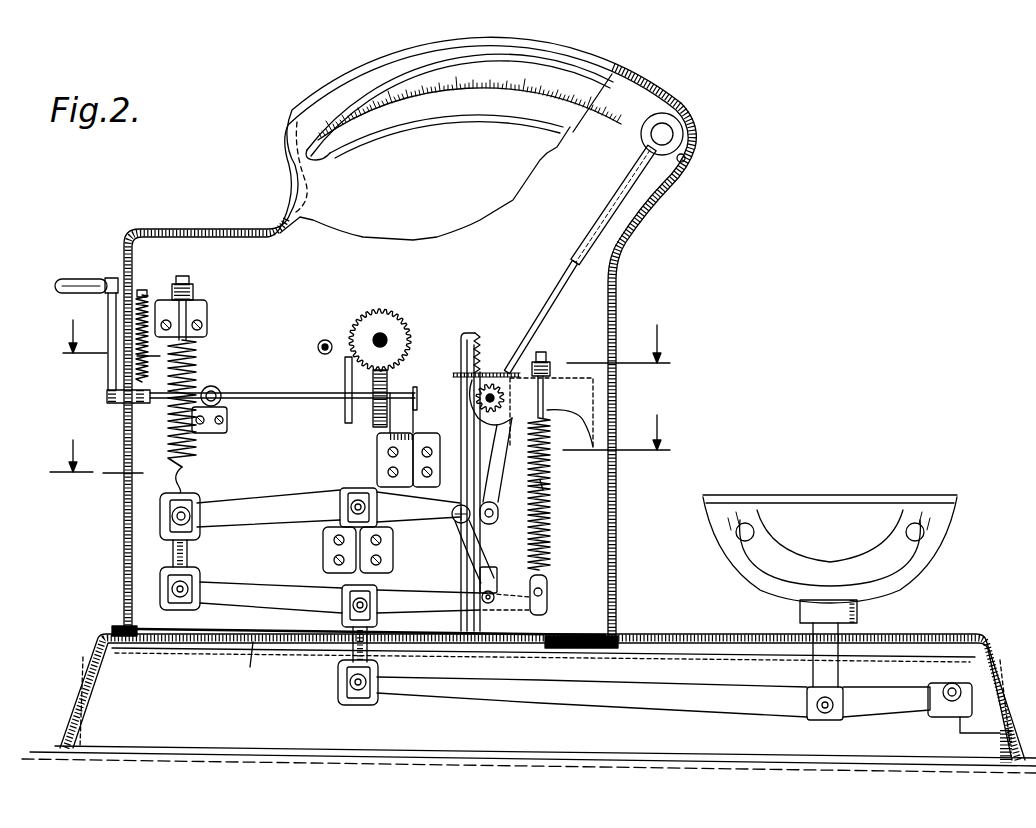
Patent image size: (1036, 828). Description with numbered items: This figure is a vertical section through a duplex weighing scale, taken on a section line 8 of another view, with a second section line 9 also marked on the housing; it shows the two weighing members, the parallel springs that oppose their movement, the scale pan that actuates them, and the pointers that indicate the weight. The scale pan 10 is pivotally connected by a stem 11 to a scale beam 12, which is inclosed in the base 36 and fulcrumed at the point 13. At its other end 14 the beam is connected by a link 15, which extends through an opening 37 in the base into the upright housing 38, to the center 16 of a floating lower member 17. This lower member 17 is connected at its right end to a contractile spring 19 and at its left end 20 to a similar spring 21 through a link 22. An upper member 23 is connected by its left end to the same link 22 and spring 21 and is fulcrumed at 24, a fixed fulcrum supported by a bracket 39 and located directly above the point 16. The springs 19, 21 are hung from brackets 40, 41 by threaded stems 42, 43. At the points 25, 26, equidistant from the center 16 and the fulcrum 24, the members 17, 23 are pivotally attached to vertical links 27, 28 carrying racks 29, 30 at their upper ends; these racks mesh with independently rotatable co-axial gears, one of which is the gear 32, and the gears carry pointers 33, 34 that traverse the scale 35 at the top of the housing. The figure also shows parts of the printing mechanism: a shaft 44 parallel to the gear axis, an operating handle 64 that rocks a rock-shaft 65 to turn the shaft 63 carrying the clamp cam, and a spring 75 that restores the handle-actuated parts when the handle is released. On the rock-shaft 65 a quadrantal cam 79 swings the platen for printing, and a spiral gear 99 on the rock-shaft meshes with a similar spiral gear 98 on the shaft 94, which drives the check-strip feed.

The section line 8 is at (366, 353).
The section line 9 is at (360, 454).
The scale pan 10 is at (830, 549).
The stem 11 is at (838, 630).
The scale beam 12 is at (653, 697).
The fulcrum point 13 is at (947, 680).
The beam end 14 is at (343, 682).
The link 15 is at (373, 653).
The center of lower member 16 is at (377, 605).
The lower member 17 is at (290, 585).
The contractile spring 19 is at (550, 538).
The left end of lower member 20 is at (167, 585).
The spring 21 is at (188, 460).
The link 22 is at (173, 553).
The upper member 23 is at (200, 502).
The fulcrum 24 is at (358, 505).
The pivot point 25 is at (483, 597).
The pivot point 26 is at (490, 518).
The vertical link 27 is at (460, 537).
The vertical link 28 is at (541, 485).
The rack 29 is at (463, 347).
The rack 30 is at (510, 423).
The gear 32 is at (489, 385).
The pointer 33 is at (573, 262).
The pointer 34 is at (557, 285).
The scale 35 is at (592, 132).
The base 36 is at (707, 640).
The opening 37 is at (242, 669).
The housing 38 is at (123, 475).
The bracket 39 is at (323, 553).
The bracket 40 is at (570, 407).
The bracket 41 is at (207, 327).
The threaded stem 42 is at (541, 358).
The threaded stem 43 is at (187, 282).
The shaft 44 is at (318, 342).
The shaft 63 is at (214, 386).
The operating handle 64 is at (88, 279).
The rock-shaft 65 is at (277, 400).
The spring 75 is at (137, 372).
The quadrantal cam 79 is at (345, 372).
The shaft 94 is at (382, 335).
The spiral gear 98 is at (405, 356).
The spiral gear 99 is at (377, 417).